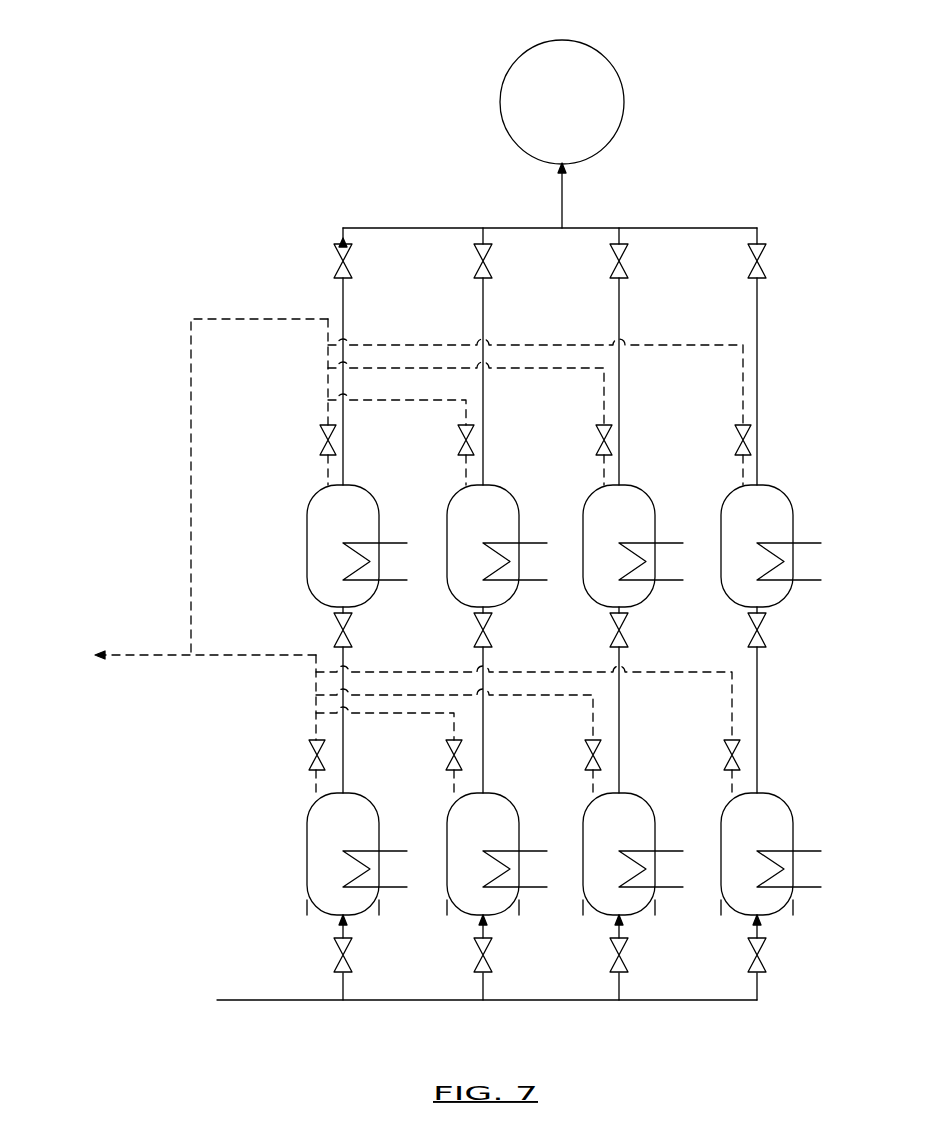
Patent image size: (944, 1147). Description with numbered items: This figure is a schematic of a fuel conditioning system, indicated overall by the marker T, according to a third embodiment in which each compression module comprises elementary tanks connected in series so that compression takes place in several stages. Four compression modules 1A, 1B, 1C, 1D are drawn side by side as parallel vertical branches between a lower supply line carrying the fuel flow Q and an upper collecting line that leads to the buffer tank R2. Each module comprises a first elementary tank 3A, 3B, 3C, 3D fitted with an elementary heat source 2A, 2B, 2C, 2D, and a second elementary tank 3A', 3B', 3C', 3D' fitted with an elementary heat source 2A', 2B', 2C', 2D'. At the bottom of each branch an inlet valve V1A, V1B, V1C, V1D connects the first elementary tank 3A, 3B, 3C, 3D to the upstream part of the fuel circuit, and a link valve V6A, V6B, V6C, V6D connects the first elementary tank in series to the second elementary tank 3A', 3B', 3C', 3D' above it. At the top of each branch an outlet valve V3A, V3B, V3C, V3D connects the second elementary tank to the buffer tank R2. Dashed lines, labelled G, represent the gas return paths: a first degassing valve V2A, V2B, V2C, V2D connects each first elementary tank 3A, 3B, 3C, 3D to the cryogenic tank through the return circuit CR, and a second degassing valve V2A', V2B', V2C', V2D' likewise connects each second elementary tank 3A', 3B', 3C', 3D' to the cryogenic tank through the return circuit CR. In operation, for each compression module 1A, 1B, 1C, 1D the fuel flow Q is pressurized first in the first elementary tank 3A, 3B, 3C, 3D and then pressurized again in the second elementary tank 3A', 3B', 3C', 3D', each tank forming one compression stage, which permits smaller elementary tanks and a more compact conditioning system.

The thermal energy storage system T is at (336, 79).
The buffer tank R2 is at (562, 102).
The fuel flow Q is at (464, 587).
The gas line G is at (467, 539).
The return circuit CR is at (185, 655).
The compression module 1A is at (313, 918).
The compression module 1B is at (452, 918).
The compression module 1C is at (597, 918).
The compression module 1D is at (735, 918).
The elementary heat source 2A is at (381, 869).
The elementary heat source 2B is at (521, 869).
The elementary heat source 2C is at (656, 869).
The elementary heat source 2D is at (795, 869).
The elementary heat source 2A' is at (383, 561).
The elementary heat source 2B' is at (523, 561).
The elementary heat source 2C' is at (658, 561).
The elementary heat source 2D' is at (797, 561).
The first elementary tank 3A is at (326, 852).
The first elementary tank 3B is at (466, 852).
The first elementary tank 3C is at (603, 852).
The first elementary tank 3D is at (741, 852).
The second elementary tank 3A' is at (324, 544).
The second elementary tank 3B' is at (465, 544).
The second elementary tank 3C' is at (602, 544).
The second elementary tank 3D' is at (739, 544).
The inlet valve V1A is at (365, 957).
The inlet valve V1B is at (504, 957).
The inlet valve V1C is at (642, 957).
The inlet valve V1D is at (782, 957).
The first degassing valve V2A is at (293, 755).
The first degassing valve V2B is at (431, 755).
The first degassing valve V2C is at (570, 755).
The first degassing valve V2D is at (710, 755).
The second degassing valve V2A' is at (304, 440).
The second degassing valve V2B' is at (442, 440).
The second degassing valve V2C' is at (580, 440).
The second degassing valve V2D' is at (719, 440).
The outlet valve V3A is at (364, 356).
The outlet valve V3B is at (503, 356).
The outlet valve V3C is at (642, 356).
The outlet valve V3D is at (781, 356).
The link valve V6A is at (365, 700).
The link valve V6B is at (504, 700).
The link valve V6C is at (641, 700).
The link valve V6D is at (781, 700).